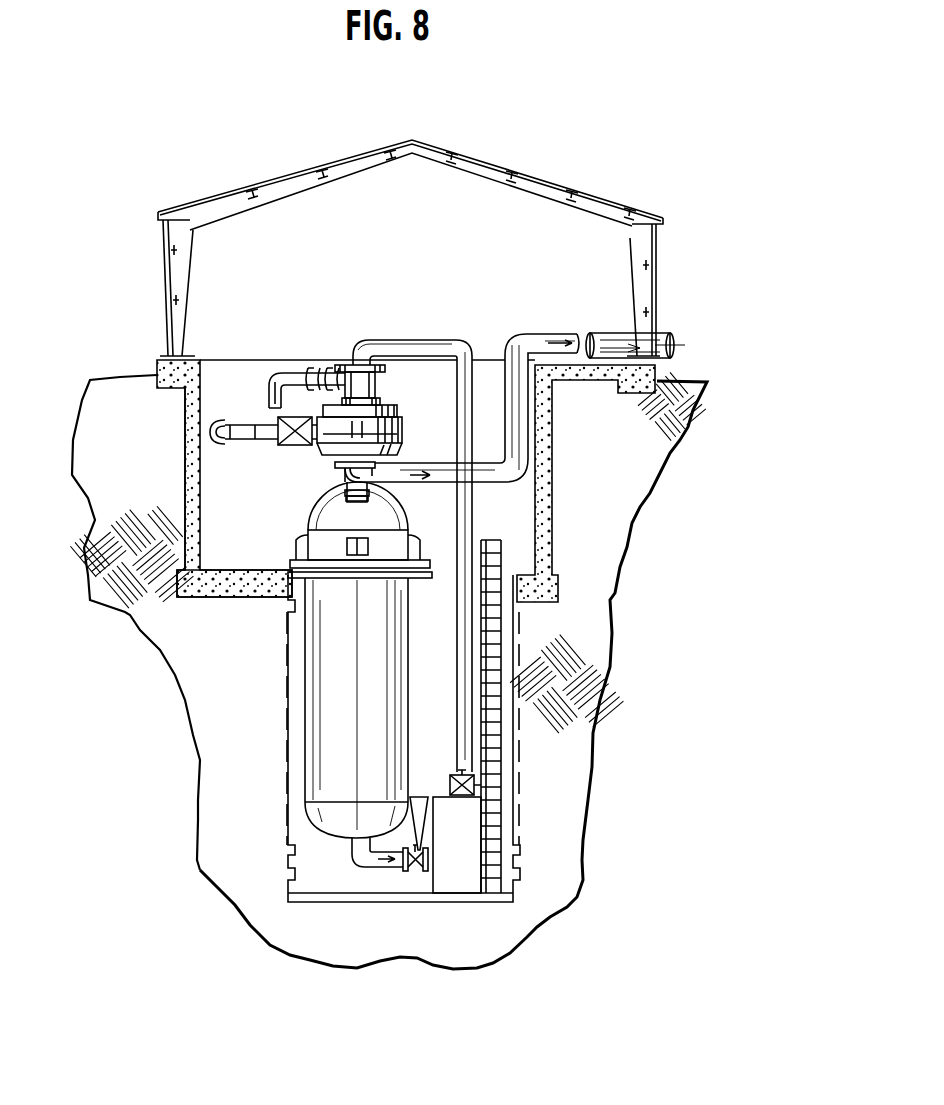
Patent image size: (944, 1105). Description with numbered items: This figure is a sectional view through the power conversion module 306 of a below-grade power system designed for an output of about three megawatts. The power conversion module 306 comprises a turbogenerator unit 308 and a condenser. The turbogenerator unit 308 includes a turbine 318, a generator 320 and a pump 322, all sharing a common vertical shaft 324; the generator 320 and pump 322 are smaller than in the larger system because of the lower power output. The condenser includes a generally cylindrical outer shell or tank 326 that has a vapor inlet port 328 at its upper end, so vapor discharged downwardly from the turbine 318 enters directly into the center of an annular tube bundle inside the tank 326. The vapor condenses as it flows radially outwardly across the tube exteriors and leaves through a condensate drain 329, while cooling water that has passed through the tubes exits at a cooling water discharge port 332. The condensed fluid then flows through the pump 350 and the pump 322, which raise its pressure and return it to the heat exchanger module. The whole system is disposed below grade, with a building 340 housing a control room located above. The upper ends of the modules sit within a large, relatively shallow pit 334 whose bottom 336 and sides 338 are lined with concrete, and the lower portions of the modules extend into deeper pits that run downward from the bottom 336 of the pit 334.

The power conversion module 306 is at (289, 718).
The turbogenerator unit 308 is at (406, 425).
The turbine 318 is at (395, 455).
The generator 320 is at (380, 396).
The pump 322 is at (342, 362).
The common vertical shaft 324 is at (325, 452).
The tank 326 is at (344, 668).
The vapor inlet port 328 is at (345, 482).
The condensate drain 329 is at (353, 842).
The cooling water discharge port 332 is at (347, 505).
The pit 334 is at (173, 436).
The bottom 336 is at (242, 598).
The sides 338 is at (185, 468).
The building 340 is at (671, 292).
The pump 350 is at (468, 843).